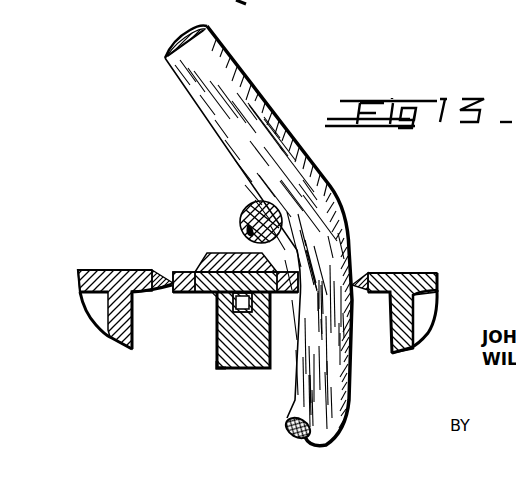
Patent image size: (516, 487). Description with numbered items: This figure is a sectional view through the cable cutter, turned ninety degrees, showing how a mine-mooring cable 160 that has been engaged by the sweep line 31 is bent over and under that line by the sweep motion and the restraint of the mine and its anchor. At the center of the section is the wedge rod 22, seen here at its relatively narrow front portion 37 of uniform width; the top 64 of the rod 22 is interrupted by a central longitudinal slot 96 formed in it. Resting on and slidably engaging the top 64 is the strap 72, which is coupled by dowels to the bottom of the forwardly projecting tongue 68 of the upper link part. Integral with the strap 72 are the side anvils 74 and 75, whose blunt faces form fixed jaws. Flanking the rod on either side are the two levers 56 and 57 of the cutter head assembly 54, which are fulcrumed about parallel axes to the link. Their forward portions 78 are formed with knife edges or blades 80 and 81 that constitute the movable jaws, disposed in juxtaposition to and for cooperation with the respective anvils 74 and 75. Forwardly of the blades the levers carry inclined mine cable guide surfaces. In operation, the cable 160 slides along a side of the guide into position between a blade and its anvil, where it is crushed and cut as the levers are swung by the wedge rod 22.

The mine-mooring cable 160 is at (212, 122).
The sweep line 31 is at (243, 213).
The tongue 68 is at (207, 253).
The side anvil 75 is at (183, 273).
The side anvil 74 is at (298, 285).
The strap 72 is at (212, 294).
The top of the rod 64 is at (236, 296).
The central longitudinal slot 96 is at (242, 303).
The front portion of the rod 37 is at (217, 349).
The wedge rod 22 is at (215, 365).
The lever 57 is at (78, 278).
The forward portions of the levers 78 is at (87, 315).
The blade 81 is at (158, 288).
The blade 80 is at (357, 272).
The cutter head assembly 54 is at (427, 272).
The lever 56 is at (438, 280).